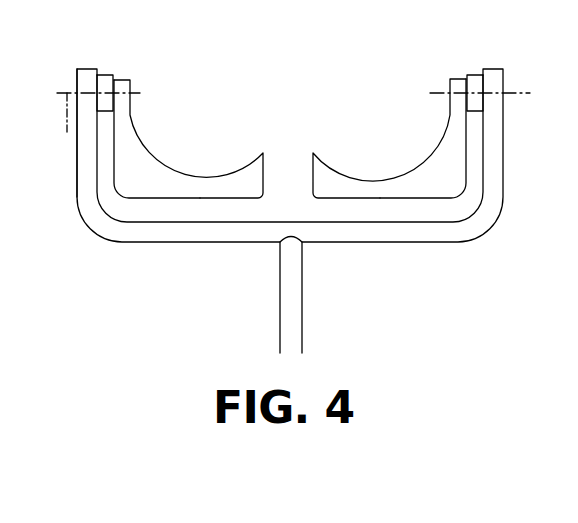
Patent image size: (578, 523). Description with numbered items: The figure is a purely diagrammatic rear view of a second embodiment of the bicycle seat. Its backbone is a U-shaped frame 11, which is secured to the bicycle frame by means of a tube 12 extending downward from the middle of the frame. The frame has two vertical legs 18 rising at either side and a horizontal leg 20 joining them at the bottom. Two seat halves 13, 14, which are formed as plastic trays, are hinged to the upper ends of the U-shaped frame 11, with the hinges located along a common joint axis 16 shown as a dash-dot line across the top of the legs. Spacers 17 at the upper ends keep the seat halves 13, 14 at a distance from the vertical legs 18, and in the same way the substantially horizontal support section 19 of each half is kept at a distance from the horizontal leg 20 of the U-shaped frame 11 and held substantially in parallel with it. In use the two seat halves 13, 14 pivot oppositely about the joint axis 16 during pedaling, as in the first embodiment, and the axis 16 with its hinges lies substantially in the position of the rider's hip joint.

The U-shaped frame 11 is at (498, 162).
The tube 12 is at (297, 313).
The seat half 13 is at (167, 170).
The seat half 14 is at (397, 170).
The joint axis 16 is at (283, 123).
The spacer 17 is at (105, 82).
The vertical leg 18 is at (88, 152).
The horizontal support section 19 is at (195, 198).
The horizontal leg 20 is at (245, 232).